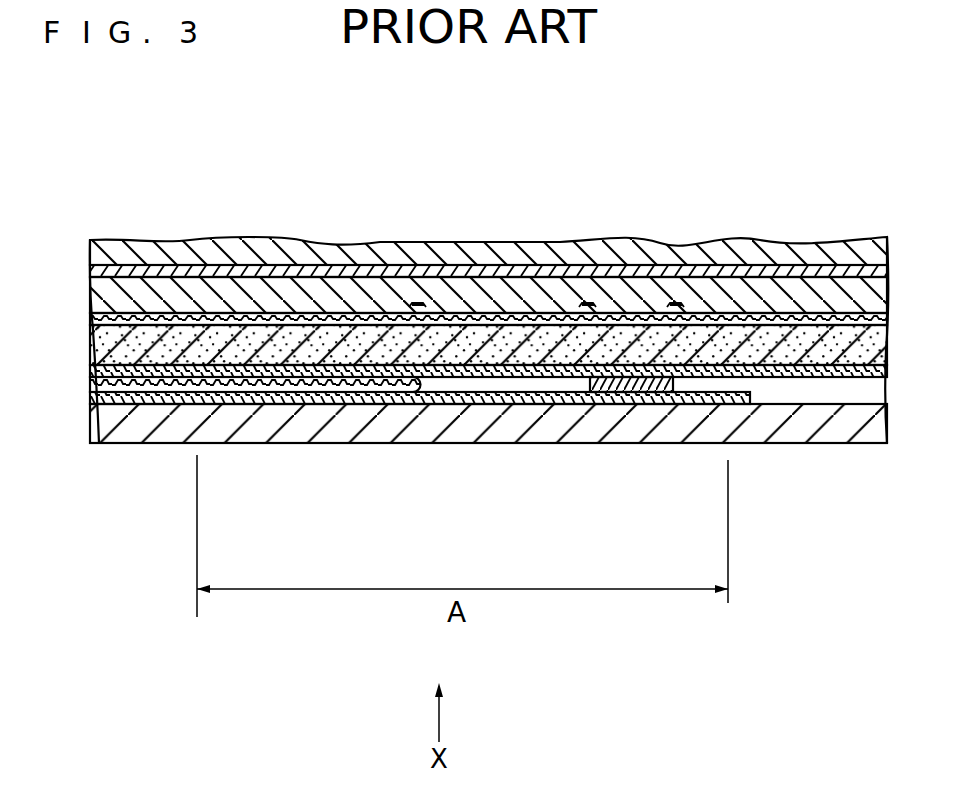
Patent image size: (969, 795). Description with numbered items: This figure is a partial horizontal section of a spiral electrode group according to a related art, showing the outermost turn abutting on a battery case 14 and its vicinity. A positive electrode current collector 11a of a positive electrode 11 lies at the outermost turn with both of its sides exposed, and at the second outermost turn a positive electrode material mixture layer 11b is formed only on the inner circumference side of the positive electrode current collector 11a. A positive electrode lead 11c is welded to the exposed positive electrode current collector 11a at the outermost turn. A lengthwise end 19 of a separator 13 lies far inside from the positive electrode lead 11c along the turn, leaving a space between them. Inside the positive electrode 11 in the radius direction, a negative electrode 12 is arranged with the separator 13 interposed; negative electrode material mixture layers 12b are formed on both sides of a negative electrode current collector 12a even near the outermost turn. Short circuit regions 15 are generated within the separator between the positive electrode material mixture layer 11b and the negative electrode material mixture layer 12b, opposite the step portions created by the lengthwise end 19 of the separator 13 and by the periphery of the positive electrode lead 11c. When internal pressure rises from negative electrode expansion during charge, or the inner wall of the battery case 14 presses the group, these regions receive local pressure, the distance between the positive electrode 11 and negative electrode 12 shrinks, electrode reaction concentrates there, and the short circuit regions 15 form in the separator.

The positive electrode 11 is at (720, 507).
The positive electrode current collector 11a is at (770, 367).
The positive electrode material mixture layer 11b is at (543, 357).
The positive electrode lead 11c is at (623, 388).
The negative electrode 12 is at (488, 223).
The negative electrode current collector 12a is at (407, 183).
The negative electrode material mixture layer 12b is at (355, 297).
The separator 13 is at (253, 386).
The battery case 14 is at (178, 446).
The short circuit region 15 is at (417, 303).
The lengthwise end 19 is at (430, 395).